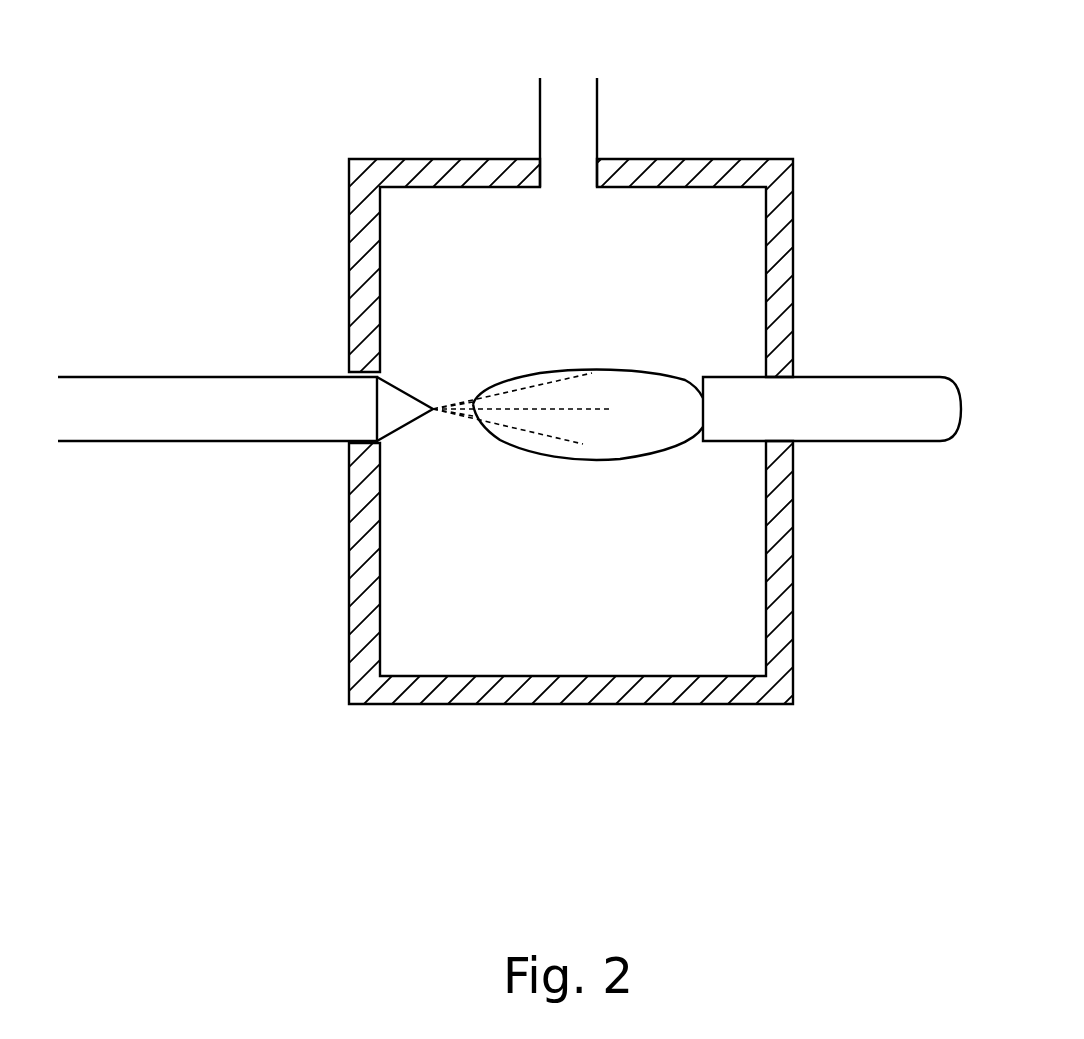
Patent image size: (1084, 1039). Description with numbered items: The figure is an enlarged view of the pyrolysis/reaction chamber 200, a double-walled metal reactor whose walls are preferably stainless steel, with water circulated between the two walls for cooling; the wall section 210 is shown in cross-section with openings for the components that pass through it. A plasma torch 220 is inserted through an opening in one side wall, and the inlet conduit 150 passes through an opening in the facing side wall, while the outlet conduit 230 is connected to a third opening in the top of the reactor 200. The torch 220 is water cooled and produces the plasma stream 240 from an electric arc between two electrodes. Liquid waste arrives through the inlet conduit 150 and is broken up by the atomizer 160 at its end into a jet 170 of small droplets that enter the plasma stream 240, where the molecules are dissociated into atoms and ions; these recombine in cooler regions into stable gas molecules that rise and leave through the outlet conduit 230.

The inlet conduit 150 is at (208, 402).
The atomizer 160 is at (400, 430).
The spray 170 is at (455, 402).
The pyrolysis/reaction chamber 200 is at (347, 218).
The chamber wall 210 is at (793, 240).
The plasma torch 220 is at (902, 375).
The outlet conduit 230 is at (597, 132).
The plasma stream 240 is at (677, 428).